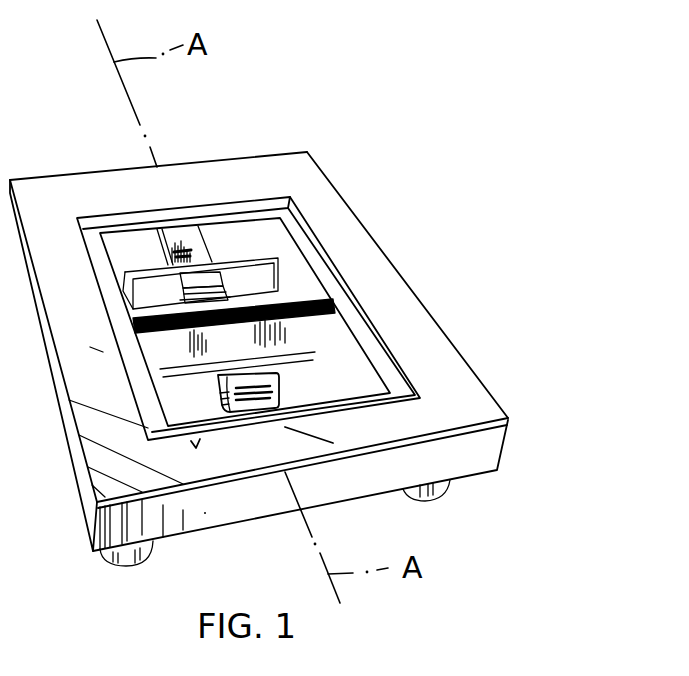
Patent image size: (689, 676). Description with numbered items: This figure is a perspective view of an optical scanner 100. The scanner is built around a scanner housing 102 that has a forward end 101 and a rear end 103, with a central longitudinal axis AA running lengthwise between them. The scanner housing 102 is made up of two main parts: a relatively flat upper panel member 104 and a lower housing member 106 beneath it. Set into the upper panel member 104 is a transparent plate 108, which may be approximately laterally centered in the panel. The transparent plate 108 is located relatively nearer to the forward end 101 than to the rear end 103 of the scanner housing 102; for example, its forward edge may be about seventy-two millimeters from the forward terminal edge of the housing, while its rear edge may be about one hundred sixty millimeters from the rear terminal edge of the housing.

The optical scanner 100 is at (403, 183).
The forward end 101 is at (286, 455).
The scanner housing 102 is at (446, 318).
The rear end 103 is at (150, 182).
The upper panel member 104 is at (463, 400).
The lower housing member 106 is at (480, 450).
The transparent plate 108 is at (233, 243).